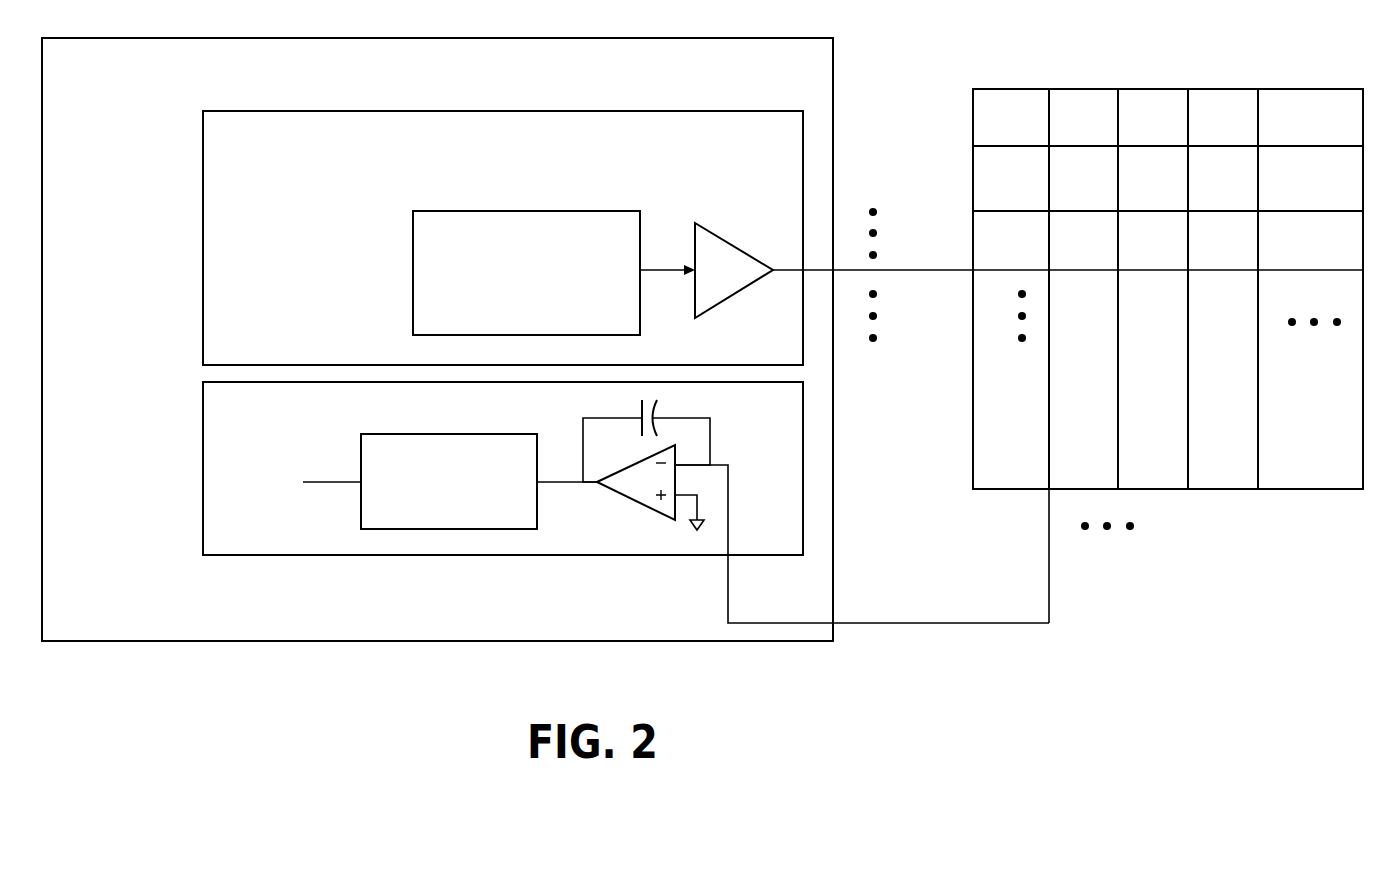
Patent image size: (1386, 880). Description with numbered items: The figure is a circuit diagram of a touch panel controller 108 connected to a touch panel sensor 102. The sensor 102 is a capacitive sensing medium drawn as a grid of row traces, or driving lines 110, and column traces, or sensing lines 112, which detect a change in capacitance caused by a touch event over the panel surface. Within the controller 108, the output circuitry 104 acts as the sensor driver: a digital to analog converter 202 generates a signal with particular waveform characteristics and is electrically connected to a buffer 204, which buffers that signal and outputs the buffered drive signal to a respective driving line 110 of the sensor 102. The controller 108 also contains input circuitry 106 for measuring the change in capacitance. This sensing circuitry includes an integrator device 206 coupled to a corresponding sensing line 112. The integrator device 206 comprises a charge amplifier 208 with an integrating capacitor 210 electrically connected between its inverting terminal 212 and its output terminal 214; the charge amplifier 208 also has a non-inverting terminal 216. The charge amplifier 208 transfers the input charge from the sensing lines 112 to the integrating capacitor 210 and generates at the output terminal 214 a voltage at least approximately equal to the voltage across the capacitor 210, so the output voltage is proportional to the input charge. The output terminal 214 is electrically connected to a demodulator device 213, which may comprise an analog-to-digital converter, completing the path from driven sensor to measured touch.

The touch panel sensor 102 is at (1015, 88).
The output circuitry 104 is at (503, 238).
The input circuitry 106 is at (503, 468).
The touch panel controller 108 is at (437, 339).
The driving line 110 is at (1010, 268).
The sensing line 112 is at (1046, 467).
The digital to analog converter 202 is at (526, 273).
The buffer 204 is at (717, 233).
The integrator device 206 is at (618, 510).
The charge amplifier 208 is at (678, 452).
The integrating capacitor 210 is at (640, 413).
The inverting terminal 212 is at (680, 462).
The demodulator device 213 is at (420, 481).
The output terminal 214 is at (595, 480).
The non-inverting terminal 216 is at (683, 507).